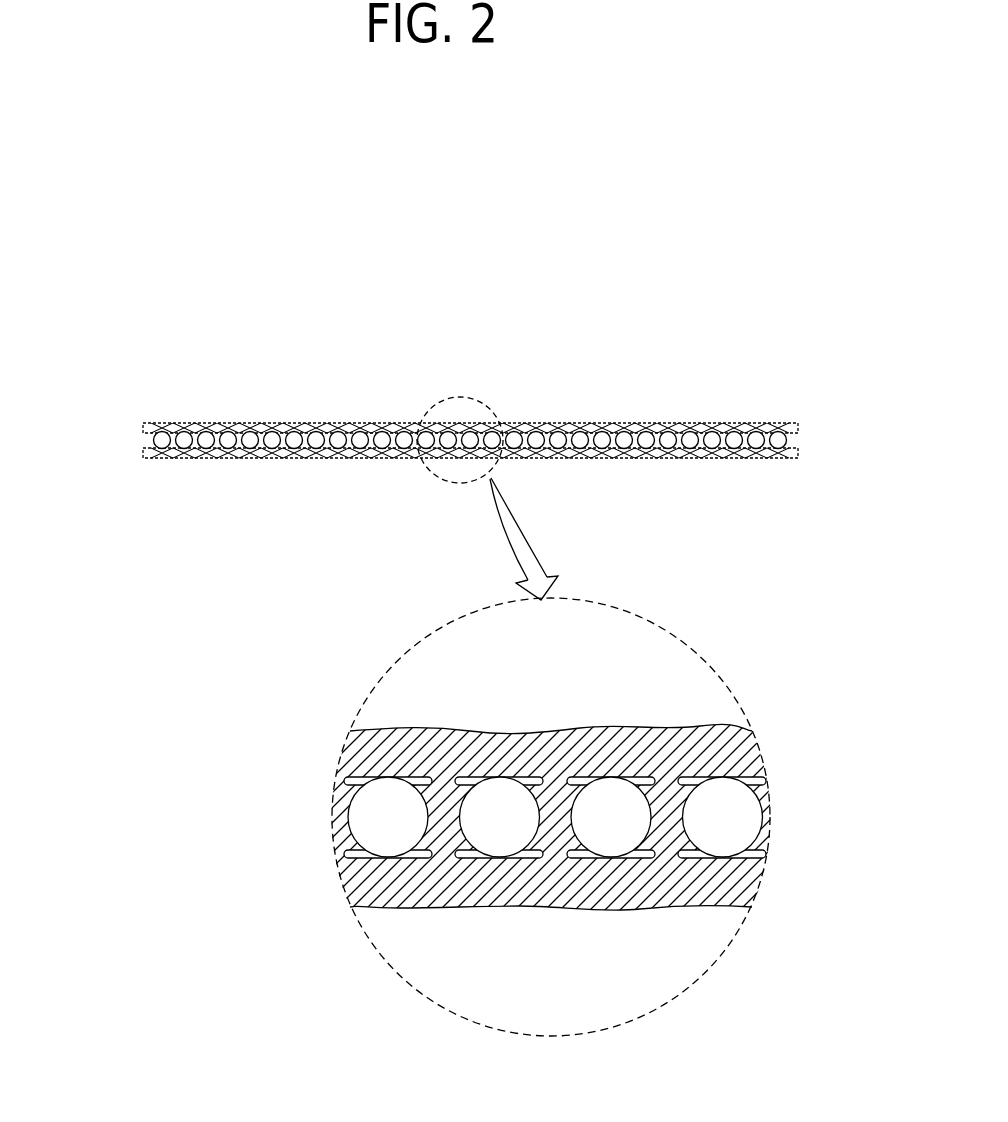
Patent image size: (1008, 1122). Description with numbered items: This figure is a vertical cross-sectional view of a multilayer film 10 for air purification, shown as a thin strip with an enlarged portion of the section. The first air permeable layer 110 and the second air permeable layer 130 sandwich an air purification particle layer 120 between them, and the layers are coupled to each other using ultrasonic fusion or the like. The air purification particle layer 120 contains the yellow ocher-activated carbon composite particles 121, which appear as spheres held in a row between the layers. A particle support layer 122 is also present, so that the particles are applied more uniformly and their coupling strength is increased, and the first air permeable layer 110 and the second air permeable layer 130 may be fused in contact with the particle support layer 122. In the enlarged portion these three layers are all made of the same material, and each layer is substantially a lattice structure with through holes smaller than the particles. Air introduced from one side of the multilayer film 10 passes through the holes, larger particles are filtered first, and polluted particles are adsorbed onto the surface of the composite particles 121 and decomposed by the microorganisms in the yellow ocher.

The multilayer film 10 is at (645, 269).
The first air permeable layer 110 is at (798, 428).
The air purification particle layer 120 is at (143, 440).
The yellow ocher-activated carbon composite particles 121 is at (228, 438).
The particle support layer 122 is at (667, 813).
The second air permeable layer 130 is at (798, 454).